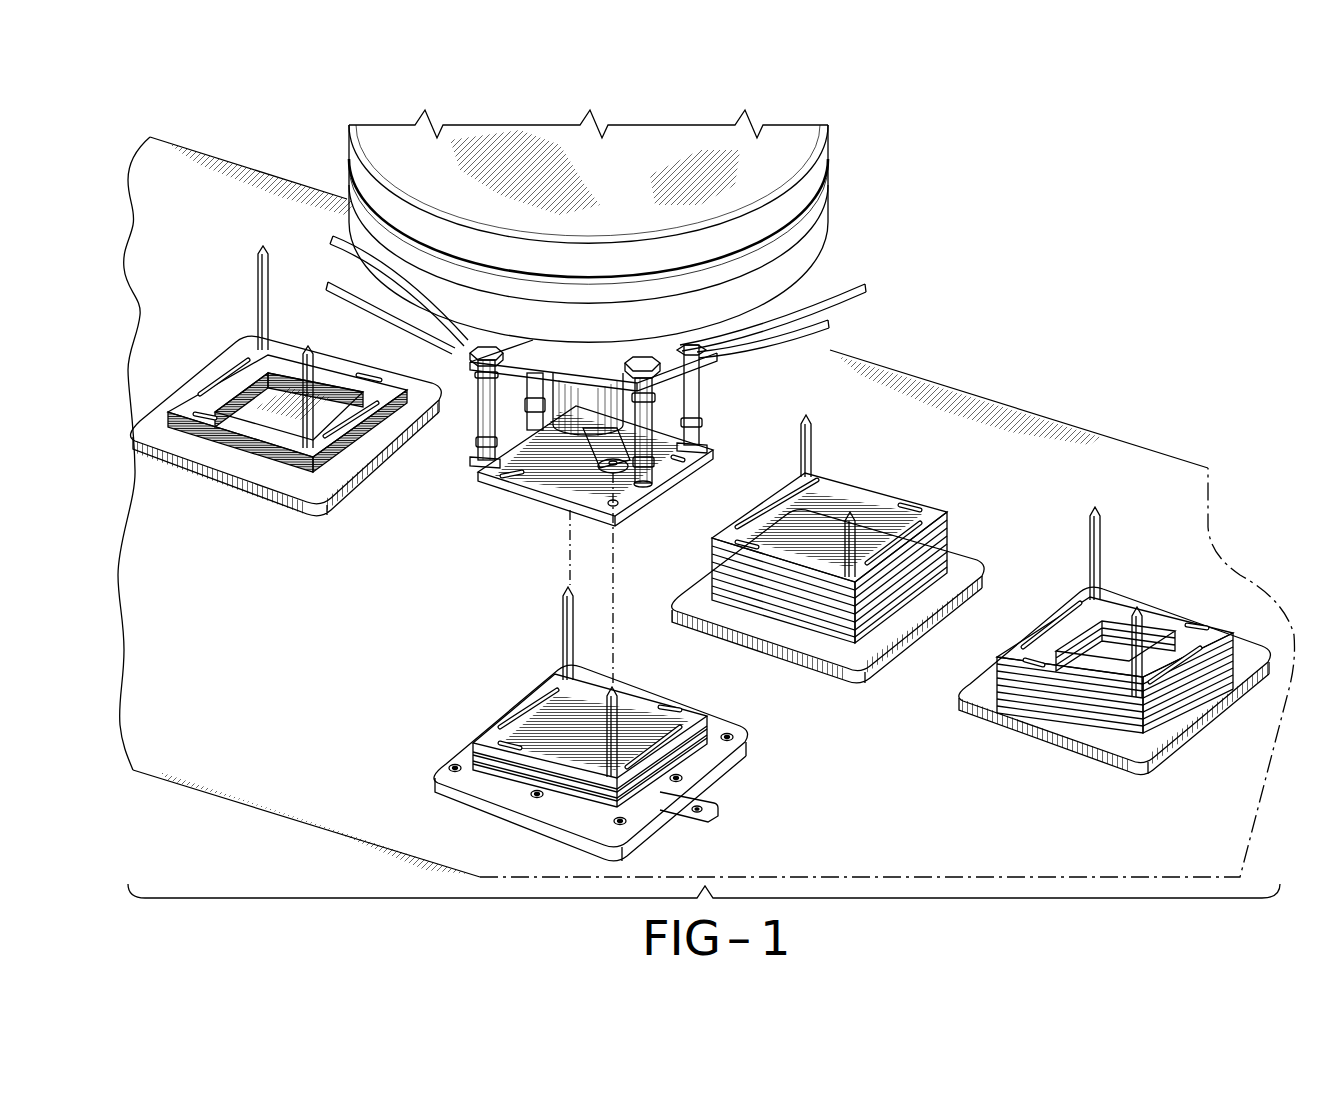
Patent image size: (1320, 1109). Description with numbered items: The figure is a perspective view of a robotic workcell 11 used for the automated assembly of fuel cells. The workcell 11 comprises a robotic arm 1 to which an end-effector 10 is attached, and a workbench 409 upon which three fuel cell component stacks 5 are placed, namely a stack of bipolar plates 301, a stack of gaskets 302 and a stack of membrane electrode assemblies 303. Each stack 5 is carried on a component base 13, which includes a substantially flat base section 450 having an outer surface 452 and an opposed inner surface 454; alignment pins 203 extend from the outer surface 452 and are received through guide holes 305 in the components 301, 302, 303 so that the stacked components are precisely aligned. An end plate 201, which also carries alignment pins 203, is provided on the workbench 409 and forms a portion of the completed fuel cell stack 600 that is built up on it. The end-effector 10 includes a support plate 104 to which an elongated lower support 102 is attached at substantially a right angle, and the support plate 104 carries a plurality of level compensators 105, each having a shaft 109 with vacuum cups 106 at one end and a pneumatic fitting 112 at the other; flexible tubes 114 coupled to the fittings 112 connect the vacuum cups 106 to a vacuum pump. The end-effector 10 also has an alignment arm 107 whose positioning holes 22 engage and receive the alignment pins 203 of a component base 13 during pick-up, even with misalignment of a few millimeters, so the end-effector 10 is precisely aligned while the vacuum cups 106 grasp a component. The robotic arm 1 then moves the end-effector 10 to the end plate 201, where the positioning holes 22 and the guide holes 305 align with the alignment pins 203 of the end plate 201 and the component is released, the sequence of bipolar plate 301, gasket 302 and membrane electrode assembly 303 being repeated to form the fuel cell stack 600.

The robotic arm 1 is at (836, 172).
The fuel cell components stack 5 is at (700, 577).
The end-effector 10 is at (594, 463).
The robotic workcell 11 is at (1062, 298).
The component base 13 is at (701, 571).
The positioning holes 22 is at (591, 579).
The lower support 102 is at (531, 361).
The support plate 104 is at (577, 357).
The level compensators 105 is at (470, 408).
The vacuum cups 106 is at (481, 464).
The alignment arm 107 is at (604, 450).
The shaft 109 is at (611, 347).
The pneumatic fitting 112 is at (652, 347).
The flexible tubes 114 is at (338, 253).
The end plate 201 is at (441, 768).
The alignment pins 203 is at (258, 266).
The bipolar plates 301 is at (637, 523).
The gaskets 302 is at (1066, 598).
The membrane electrode assemblies 303 is at (290, 441).
The guide holes 305 is at (620, 503).
The workbench 409 is at (221, 674).
The base section 450 is at (312, 509).
The outer surface 452 is at (195, 383).
The inner surface 454 is at (190, 470).
The fuel cell stack 600 is at (545, 748).